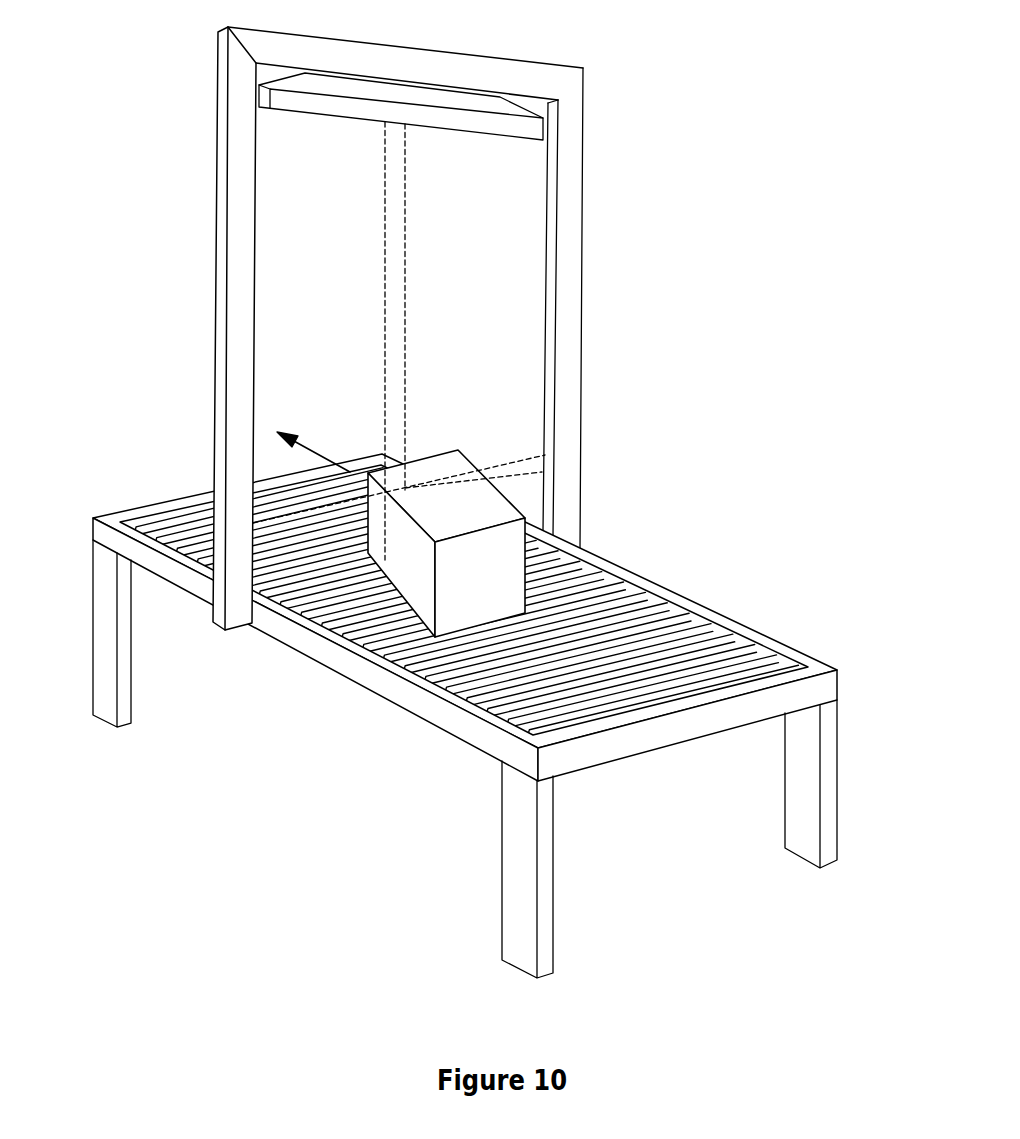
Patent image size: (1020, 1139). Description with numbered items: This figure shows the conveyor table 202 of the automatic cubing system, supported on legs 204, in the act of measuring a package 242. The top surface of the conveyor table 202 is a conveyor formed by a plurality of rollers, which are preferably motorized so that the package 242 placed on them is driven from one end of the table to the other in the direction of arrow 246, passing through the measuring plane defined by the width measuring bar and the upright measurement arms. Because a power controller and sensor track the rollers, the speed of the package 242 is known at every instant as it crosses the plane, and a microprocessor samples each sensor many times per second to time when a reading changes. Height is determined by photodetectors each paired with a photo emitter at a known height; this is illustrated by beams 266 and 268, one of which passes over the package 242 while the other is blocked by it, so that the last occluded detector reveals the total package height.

The conveyor table 202 is at (790, 650).
The legs 204 is at (107, 702).
The package 242 is at (458, 450).
The arrow 246 is at (310, 443).
The beam 266 is at (535, 480).
The beam 268 is at (527, 458).